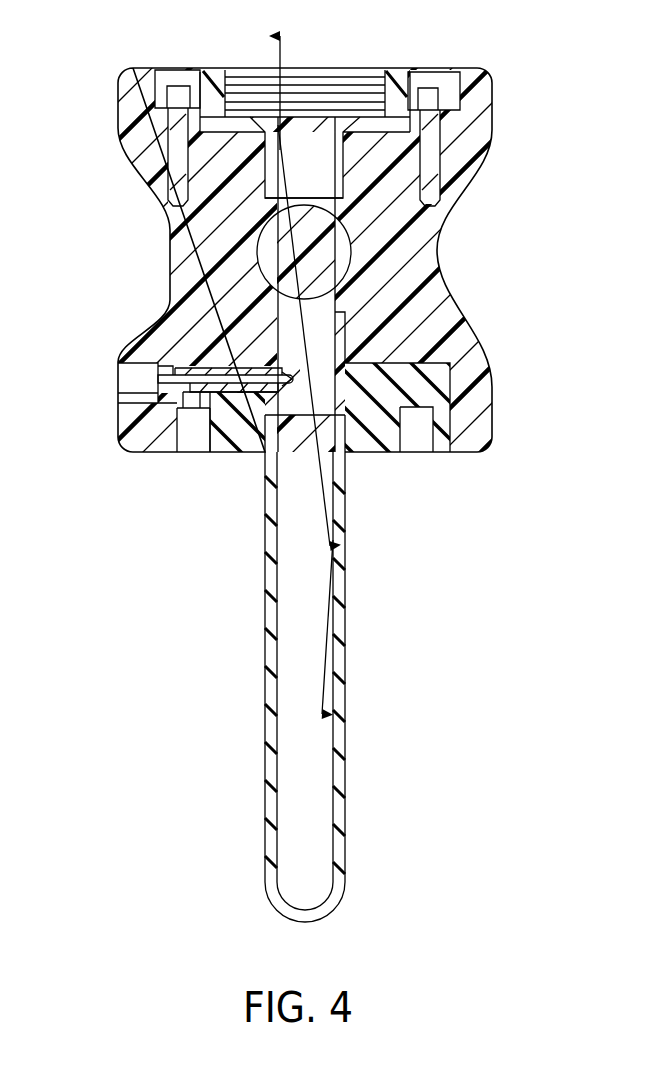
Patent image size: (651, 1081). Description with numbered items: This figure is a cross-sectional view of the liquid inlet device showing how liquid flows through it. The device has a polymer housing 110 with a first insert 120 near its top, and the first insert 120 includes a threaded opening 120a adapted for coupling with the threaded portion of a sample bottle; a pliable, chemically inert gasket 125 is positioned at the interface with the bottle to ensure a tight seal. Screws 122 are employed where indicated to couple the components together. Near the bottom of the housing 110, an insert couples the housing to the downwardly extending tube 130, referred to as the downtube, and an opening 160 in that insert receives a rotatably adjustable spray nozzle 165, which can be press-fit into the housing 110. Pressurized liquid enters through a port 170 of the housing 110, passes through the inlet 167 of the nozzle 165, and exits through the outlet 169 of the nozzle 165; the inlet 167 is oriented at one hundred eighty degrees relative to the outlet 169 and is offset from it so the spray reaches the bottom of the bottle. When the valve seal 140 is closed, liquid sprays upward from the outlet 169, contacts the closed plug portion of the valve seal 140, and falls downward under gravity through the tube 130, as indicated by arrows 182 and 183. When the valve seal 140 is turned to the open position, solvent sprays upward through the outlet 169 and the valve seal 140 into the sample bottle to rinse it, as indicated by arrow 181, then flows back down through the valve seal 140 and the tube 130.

The housing 110 is at (465, 150).
The first insert 120 is at (393, 88).
The threaded opening 120a is at (313, 87).
The screws 122 is at (177, 157).
The gasket 125 is at (332, 123).
The downwardly extending tube 130 is at (343, 795).
The valve seal 140 is at (338, 262).
The opening 160 is at (127, 387).
The nozzle 165 is at (190, 372).
The inlet 167 is at (140, 437).
The outlet 169 is at (290, 375).
The port 170 is at (187, 445).
The arrow 181 is at (277, 60).
The arrow 182 is at (337, 500).
The arrow 183 is at (337, 612).